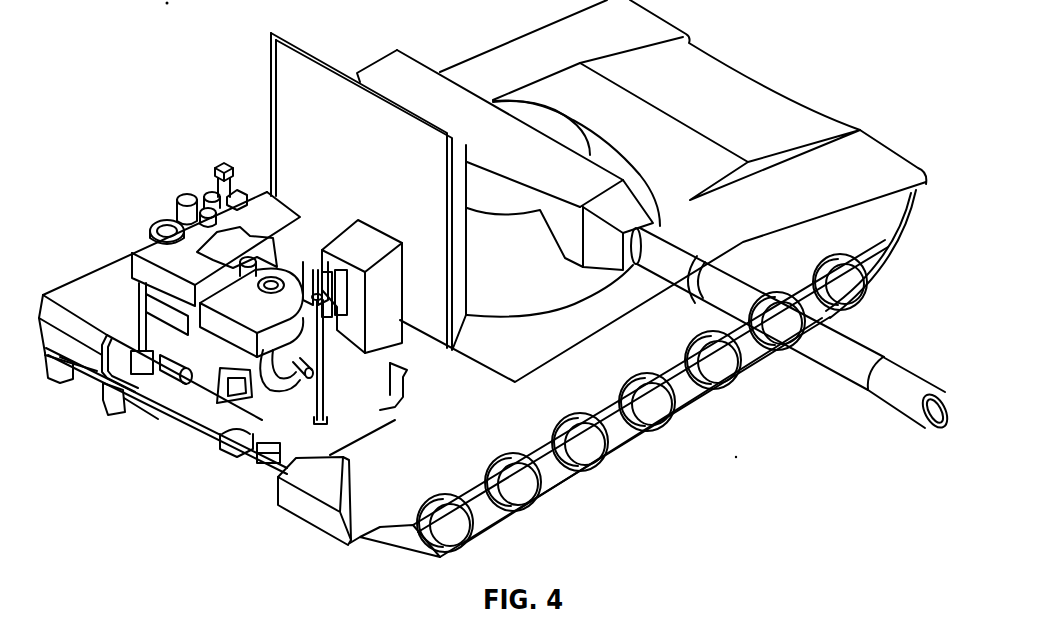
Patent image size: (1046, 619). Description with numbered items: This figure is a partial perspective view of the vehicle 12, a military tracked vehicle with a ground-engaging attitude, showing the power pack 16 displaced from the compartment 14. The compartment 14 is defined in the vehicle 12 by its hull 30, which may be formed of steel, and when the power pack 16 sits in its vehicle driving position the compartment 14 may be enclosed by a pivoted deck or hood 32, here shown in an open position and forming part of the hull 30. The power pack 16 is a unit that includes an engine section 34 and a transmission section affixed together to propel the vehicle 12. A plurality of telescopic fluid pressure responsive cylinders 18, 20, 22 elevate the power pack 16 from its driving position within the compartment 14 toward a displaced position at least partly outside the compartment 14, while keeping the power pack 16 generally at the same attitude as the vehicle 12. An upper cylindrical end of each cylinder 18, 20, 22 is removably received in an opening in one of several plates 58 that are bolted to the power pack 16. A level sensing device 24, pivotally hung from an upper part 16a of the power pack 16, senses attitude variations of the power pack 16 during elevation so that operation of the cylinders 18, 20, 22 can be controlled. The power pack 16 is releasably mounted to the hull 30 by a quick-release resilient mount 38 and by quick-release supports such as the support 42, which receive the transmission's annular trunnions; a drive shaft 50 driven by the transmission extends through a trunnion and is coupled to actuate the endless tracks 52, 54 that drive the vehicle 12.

The vehicle 12 is at (806, 83).
The compartment 14 is at (213, 416).
The power pack 16 is at (183, 158).
The upper part of power pack 16a is at (222, 252).
The telescopic fluid pressure responsive cylinder 18 is at (224, 164).
The telescopic fluid pressure responsive cylinder 20 is at (138, 302).
The telescopic fluid pressure responsive cylinder 22 is at (327, 393).
The level sensing device 24 is at (252, 260).
The hull 30 is at (153, 420).
The deck or hood 32 is at (324, 64).
The engine section 34 is at (301, 217).
The quick-release resilient mount 38 is at (233, 455).
The quick-release support 42 is at (260, 464).
The drive shaft 50 is at (283, 368).
The endless track 52 is at (76, 384).
The endless track 54 is at (517, 512).
The plate 58 is at (133, 248).